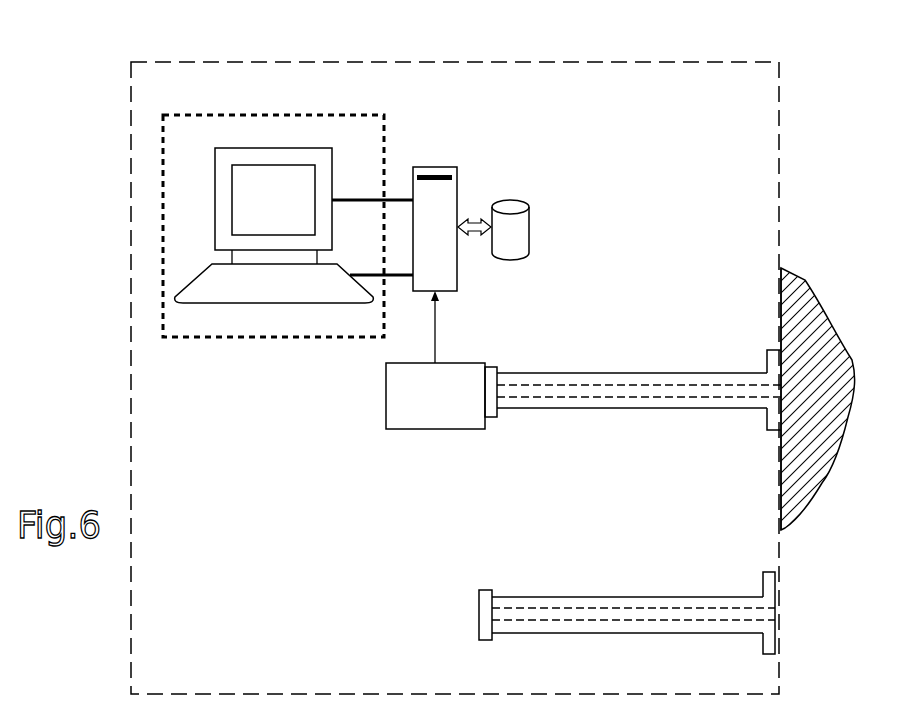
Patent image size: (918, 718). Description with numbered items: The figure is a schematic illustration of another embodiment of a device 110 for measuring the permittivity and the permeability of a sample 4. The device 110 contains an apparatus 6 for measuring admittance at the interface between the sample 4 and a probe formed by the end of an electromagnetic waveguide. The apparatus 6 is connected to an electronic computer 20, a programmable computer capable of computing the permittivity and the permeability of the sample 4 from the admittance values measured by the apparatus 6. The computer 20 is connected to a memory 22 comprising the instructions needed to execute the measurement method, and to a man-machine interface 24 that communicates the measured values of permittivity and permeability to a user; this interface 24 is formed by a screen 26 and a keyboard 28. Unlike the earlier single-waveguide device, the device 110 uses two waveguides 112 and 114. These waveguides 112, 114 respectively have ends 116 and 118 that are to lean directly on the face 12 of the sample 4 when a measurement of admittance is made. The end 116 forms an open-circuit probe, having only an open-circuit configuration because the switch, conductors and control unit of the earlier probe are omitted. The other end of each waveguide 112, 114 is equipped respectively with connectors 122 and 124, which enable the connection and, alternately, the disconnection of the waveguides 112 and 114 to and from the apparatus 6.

The device 110 is at (767, 56).
The man-machine interface 24 is at (257, 346).
The screen 26 is at (259, 214).
The keyboard 28 is at (259, 292).
The electronic computer 20 is at (441, 160).
The memory 22 is at (513, 193).
The apparatus 6 is at (427, 405).
The connector 122 is at (490, 367).
The waveguide 112 is at (593, 365).
The end 116 is at (760, 360).
The face 12 is at (781, 280).
The sample 4 is at (810, 283).
The connector 124 is at (483, 590).
The waveguide 114 is at (588, 588).
The end 118 is at (753, 582).